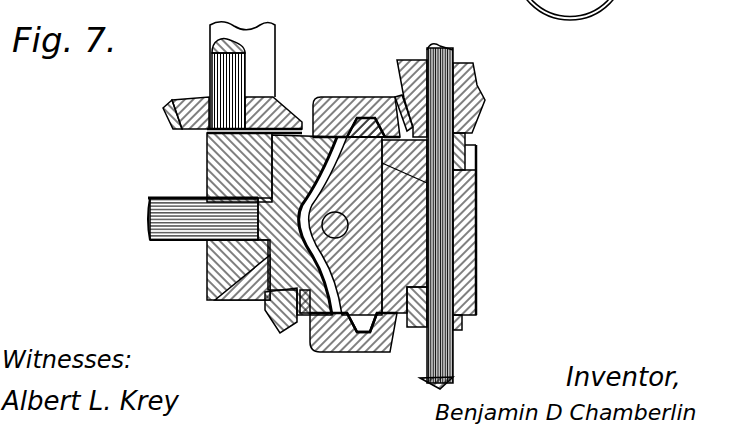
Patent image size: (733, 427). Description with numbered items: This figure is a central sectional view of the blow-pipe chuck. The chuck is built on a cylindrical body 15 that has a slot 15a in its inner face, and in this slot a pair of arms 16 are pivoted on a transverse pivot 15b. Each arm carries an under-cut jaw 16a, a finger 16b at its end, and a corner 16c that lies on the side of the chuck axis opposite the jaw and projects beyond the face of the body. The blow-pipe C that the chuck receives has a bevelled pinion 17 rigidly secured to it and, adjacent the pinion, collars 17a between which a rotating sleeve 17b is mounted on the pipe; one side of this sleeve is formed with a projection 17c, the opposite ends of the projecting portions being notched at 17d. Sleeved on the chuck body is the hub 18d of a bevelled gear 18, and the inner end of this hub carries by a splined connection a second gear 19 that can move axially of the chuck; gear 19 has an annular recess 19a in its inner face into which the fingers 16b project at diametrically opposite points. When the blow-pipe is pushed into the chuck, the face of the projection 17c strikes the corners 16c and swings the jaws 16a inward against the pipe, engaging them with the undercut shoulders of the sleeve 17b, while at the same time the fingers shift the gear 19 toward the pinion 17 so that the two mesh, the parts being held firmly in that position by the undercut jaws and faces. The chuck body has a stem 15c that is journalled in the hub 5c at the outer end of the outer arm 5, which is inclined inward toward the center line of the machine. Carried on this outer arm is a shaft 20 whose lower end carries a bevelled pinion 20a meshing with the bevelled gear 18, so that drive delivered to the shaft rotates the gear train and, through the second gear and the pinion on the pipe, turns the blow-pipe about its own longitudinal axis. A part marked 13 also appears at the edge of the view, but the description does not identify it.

The outer arm 5 is at (222, 37).
The shaft 20 is at (222, 74).
The bevelled pinion 20a is at (193, 113).
The hub 5c is at (222, 167).
The stem 15c is at (165, 222).
The cylindrical body 15 is at (207, 297).
The transverse pivot 15b is at (262, 302).
The corner 16c is at (287, 312).
The arms 16 is at (365, 203).
The under-cut jaws 16a is at (425, 180).
The fingers 16b is at (355, 116).
The slot 15a is at (336, 134).
The second gear 19 is at (397, 103).
The annular recess 19a is at (388, 90).
The bevelled pinion 17 is at (483, 115).
The collars 17a is at (462, 147).
The rotating sleeve 17b is at (348, 231).
The projection 17c is at (362, 343).
The notch 17d is at (409, 330).
The bevelled gear 18 is at (312, 323).
The hub 18d is at (305, 320).
The blow-pipe c is at (440, 188).
The frame 13 is at (445, 4).